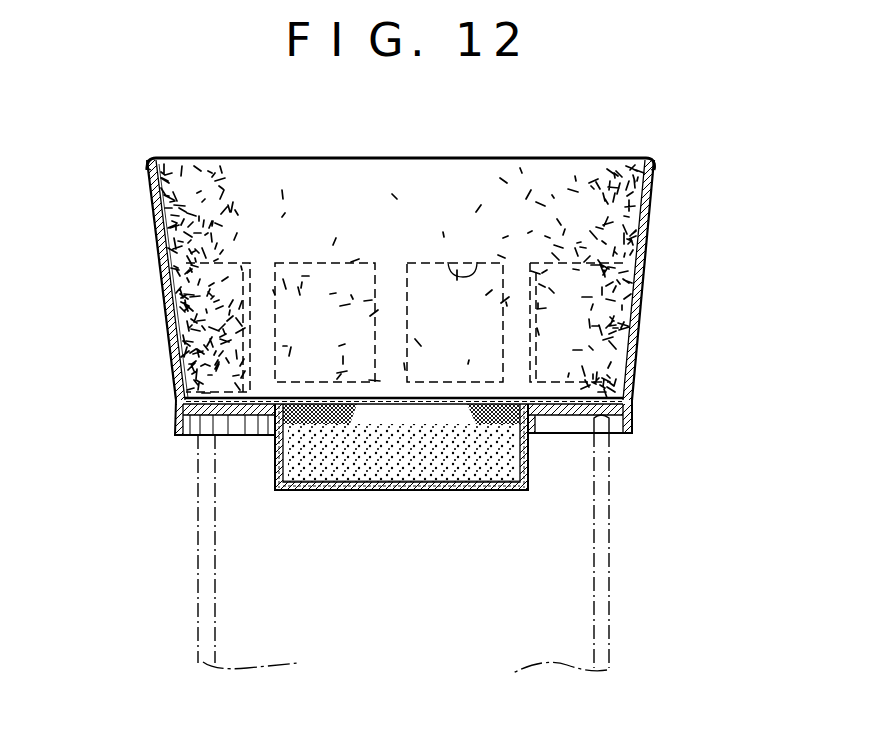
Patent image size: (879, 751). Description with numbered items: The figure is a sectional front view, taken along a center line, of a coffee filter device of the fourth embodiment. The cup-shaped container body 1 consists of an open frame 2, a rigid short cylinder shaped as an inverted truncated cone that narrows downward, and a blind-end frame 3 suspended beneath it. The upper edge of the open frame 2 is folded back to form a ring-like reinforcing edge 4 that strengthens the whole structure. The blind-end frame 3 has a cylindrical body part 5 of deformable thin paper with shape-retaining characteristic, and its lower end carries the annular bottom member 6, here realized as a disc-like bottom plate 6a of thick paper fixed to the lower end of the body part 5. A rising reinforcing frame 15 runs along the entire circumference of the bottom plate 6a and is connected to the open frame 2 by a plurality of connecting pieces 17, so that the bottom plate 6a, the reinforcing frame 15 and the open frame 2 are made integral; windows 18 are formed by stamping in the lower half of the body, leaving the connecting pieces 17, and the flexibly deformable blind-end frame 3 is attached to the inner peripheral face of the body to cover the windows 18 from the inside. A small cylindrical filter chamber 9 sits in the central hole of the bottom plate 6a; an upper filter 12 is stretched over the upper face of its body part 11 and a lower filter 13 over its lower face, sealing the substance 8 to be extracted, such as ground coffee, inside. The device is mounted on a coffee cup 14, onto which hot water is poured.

The container body 1 is at (130, 166).
The open frame 2 is at (150, 222).
The blind-end frame 3 is at (173, 384).
The reinforcing edge 4 is at (657, 167).
The body part 5 is at (170, 307).
The annular bottom member 6 is at (570, 417).
The bottom plate 6a is at (510, 430).
The substance to be extracted 8 is at (424, 477).
The filter chamber 9 is at (330, 497).
The body part of the filter chamber 11 is at (275, 469).
The filter 12 is at (448, 398).
The filter 13 is at (371, 492).
The coffee cup 14 is at (205, 522).
The reinforcing frame 15 is at (633, 420).
The connecting pieces 17 is at (260, 276).
The windows 18 is at (448, 262).